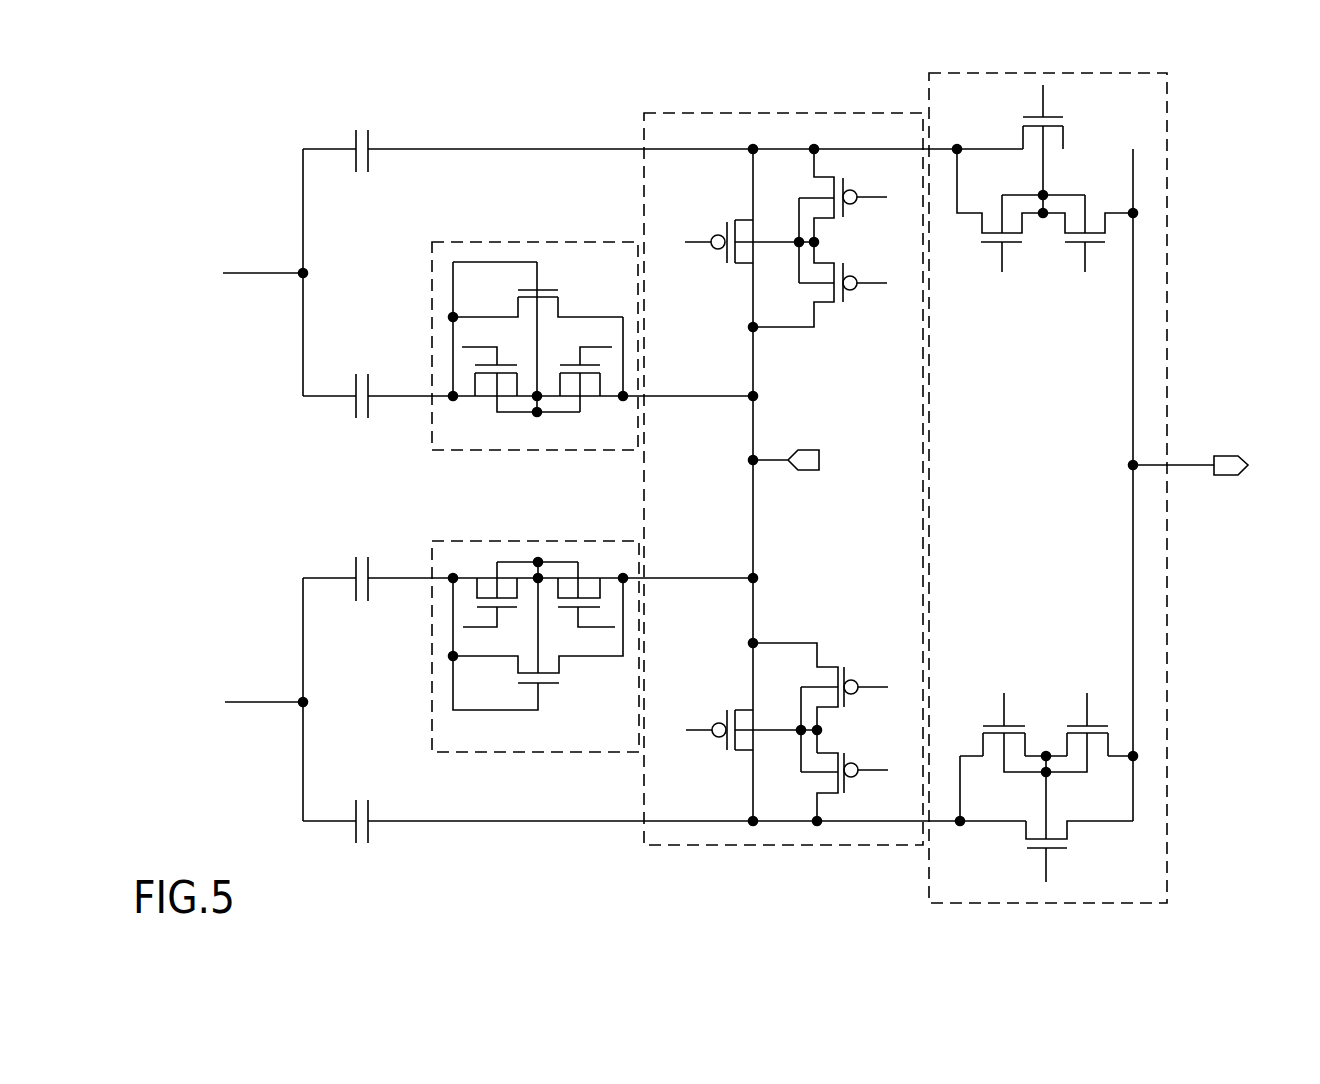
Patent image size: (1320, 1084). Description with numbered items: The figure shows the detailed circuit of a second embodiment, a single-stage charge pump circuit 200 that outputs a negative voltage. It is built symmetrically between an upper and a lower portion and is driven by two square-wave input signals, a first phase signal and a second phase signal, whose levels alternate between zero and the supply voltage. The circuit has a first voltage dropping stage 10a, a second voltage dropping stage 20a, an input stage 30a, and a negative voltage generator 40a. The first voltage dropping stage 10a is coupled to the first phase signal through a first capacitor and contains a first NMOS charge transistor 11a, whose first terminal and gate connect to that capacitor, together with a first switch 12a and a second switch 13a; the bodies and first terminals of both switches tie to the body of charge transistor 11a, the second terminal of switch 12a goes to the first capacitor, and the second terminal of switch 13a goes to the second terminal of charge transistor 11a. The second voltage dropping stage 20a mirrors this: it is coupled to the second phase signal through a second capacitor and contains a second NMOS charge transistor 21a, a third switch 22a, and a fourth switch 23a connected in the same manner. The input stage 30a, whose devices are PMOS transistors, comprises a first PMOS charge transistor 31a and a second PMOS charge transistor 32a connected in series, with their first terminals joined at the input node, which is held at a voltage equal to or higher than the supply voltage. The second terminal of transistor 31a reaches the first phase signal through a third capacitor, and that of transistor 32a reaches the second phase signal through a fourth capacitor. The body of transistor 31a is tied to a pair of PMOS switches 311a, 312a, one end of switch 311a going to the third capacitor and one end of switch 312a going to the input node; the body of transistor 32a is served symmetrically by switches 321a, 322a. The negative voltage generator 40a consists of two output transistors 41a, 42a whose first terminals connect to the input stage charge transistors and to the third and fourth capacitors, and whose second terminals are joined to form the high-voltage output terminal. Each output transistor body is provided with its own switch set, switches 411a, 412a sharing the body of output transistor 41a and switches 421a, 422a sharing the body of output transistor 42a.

The single-stage charge pump circuit 200 is at (262, 128).
The first voltage dropping stage 10a is at (465, 240).
The first NMOS charge transistor 11a is at (545, 289).
The first switch 12a is at (473, 402).
The second switch 13a is at (590, 402).
The second voltage dropping stage 20a is at (480, 540).
The second NMOS charge transistor 21a is at (550, 687).
The third switch 22a is at (497, 597).
The fourth switch 23a is at (582, 588).
The input stage 30a is at (782, 113).
The first PMOS charge transistor 31a is at (722, 260).
The PMOS switch 311a is at (861, 202).
The PMOS switch 312a is at (861, 287).
The second PMOS charge transistor 32a is at (726, 708).
The PMOS switch 321a is at (845, 788).
The PMOS switch 322a is at (852, 662).
The negative voltage generator 40a is at (1162, 140).
The first NMOS output transistor 41a is at (1062, 113).
The NMOS switch 411a is at (975, 250).
The NMOS switch 412a is at (1092, 257).
The second NMOS output transistor 42a is at (1067, 848).
The NMOS switch 421a is at (1000, 710).
The NMOS switch 422a is at (1095, 705).